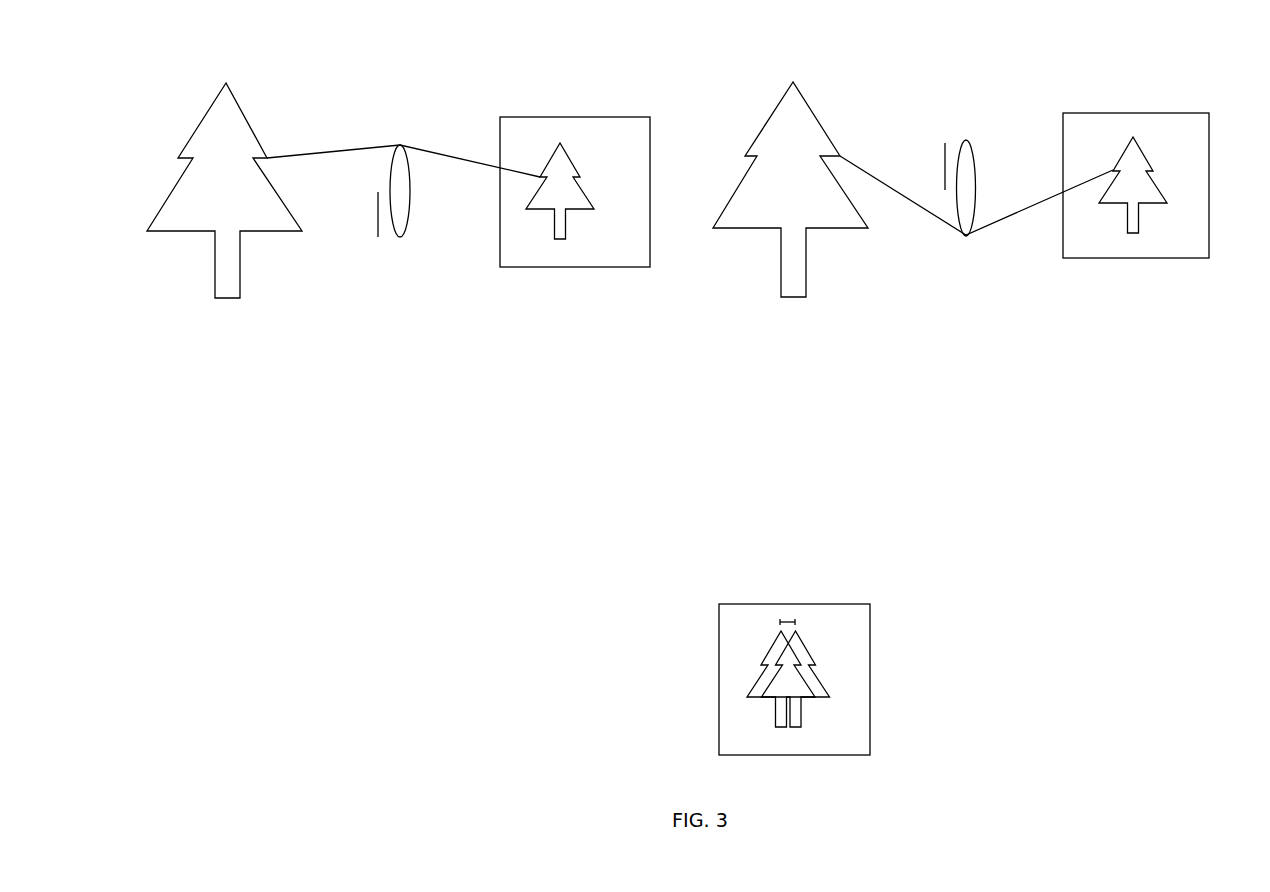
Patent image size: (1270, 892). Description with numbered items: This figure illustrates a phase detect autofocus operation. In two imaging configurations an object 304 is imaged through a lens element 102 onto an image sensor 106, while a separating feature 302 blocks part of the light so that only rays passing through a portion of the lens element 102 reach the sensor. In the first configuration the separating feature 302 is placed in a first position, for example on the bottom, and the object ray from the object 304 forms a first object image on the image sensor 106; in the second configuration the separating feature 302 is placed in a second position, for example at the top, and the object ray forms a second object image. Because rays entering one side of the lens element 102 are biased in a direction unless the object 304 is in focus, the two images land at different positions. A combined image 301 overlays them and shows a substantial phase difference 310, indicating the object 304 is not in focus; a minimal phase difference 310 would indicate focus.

The object 304 is at (254, 128).
The image sensor 106 is at (500, 132).
The lens element 102 is at (410, 203).
The separating feature 302 is at (378, 225).
The phase difference 310 is at (790, 618).
The combined image 301 is at (560, 669).